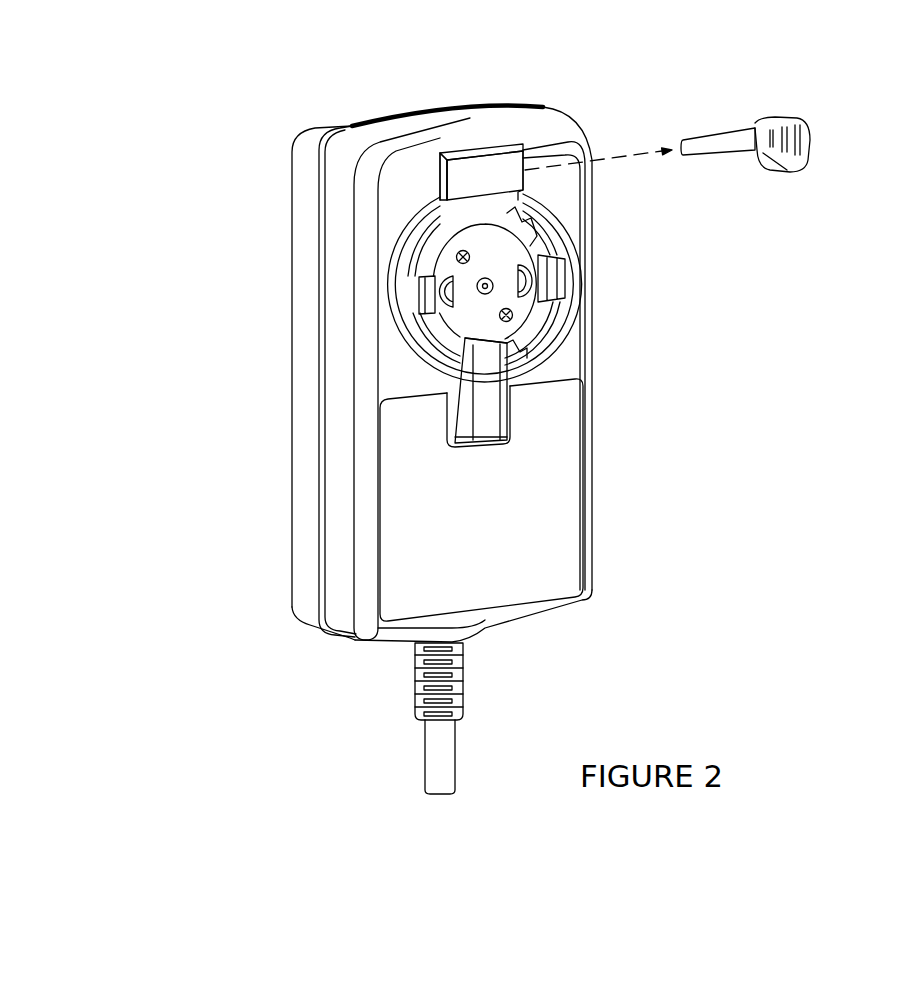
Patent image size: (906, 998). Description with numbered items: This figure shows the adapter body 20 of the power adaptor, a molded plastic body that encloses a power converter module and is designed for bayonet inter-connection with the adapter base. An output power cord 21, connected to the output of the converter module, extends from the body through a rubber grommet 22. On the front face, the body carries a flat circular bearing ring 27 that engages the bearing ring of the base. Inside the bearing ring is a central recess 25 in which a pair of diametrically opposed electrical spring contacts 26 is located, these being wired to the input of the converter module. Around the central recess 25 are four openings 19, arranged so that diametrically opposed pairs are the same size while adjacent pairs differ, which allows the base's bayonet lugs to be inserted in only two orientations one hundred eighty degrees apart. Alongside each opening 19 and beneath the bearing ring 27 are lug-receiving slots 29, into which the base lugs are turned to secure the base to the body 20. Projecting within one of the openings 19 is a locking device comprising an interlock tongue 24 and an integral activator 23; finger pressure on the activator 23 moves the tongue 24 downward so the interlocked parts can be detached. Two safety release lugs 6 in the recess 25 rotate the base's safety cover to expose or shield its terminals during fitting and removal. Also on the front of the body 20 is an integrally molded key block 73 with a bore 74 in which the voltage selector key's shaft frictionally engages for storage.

The adapter body 20 is at (178, 166).
The safety release lugs 6 is at (458, 254).
The openings 19 is at (495, 200).
The output power cord 21 is at (437, 773).
The rubber grommet 22 is at (460, 673).
The activator 23 is at (482, 420).
The interlock tongue 24 is at (485, 372).
The central recess 25 is at (497, 255).
The electrical spring contacts 26 is at (437, 285).
The bearing ring 27 is at (435, 347).
The lug-receiving slots 29 is at (527, 213).
The key block 73 is at (473, 170).
The bore 74 is at (438, 172).